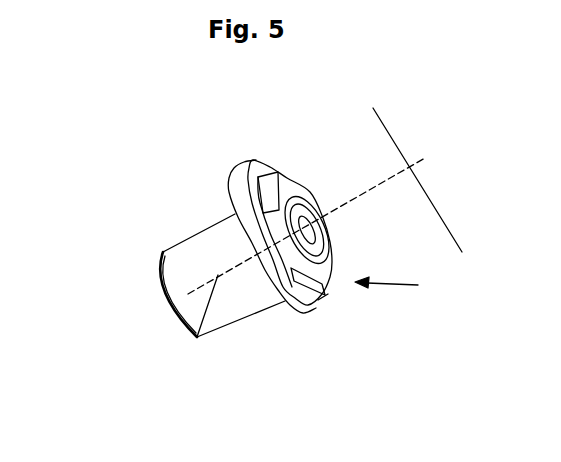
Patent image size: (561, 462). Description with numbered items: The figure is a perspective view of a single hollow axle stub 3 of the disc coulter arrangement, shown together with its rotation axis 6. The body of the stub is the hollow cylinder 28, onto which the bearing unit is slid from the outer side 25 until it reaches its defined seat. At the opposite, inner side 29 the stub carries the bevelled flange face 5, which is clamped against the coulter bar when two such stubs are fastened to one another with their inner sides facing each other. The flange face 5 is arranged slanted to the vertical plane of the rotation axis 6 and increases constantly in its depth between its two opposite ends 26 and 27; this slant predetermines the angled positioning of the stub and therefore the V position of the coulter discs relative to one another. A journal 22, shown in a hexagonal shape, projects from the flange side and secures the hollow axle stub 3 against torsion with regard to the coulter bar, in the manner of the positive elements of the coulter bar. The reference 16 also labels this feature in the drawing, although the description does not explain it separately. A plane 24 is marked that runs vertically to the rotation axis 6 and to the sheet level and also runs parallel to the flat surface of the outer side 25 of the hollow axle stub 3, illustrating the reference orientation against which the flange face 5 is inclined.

The hollow axle stub 3 is at (193, 222).
The flange face 5 is at (323, 297).
The rotation axis 6 is at (197, 337).
The bearing 16 is at (332, 261).
The journal 22 is at (349, 230).
The plane 24 is at (393, 141).
The outer side 25 is at (165, 291).
The end 26 is at (232, 171).
The end 27 is at (315, 318).
The hollow cylinder 28 is at (239, 299).
The inner side 29 is at (398, 282).